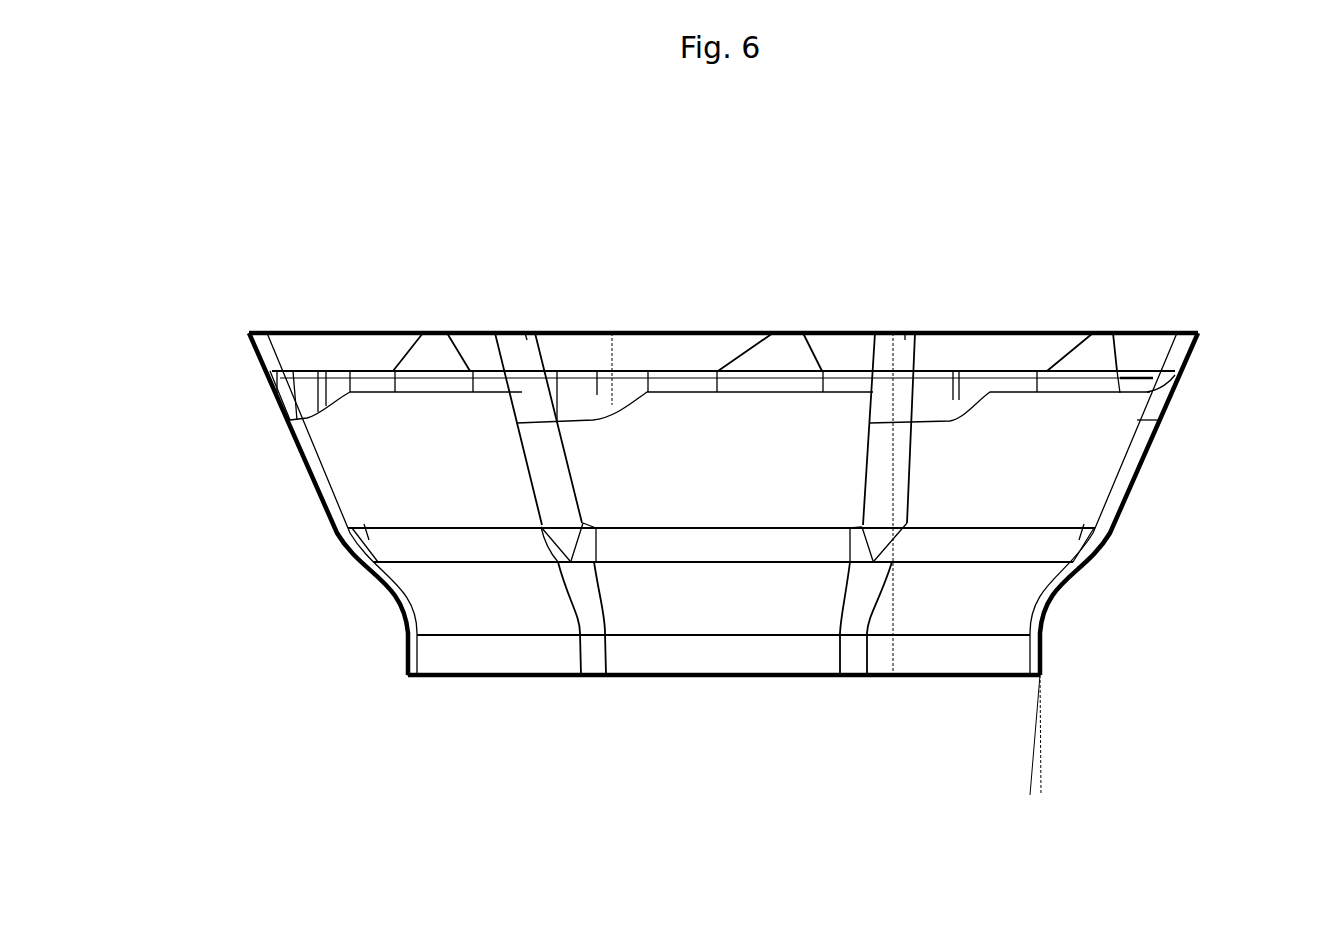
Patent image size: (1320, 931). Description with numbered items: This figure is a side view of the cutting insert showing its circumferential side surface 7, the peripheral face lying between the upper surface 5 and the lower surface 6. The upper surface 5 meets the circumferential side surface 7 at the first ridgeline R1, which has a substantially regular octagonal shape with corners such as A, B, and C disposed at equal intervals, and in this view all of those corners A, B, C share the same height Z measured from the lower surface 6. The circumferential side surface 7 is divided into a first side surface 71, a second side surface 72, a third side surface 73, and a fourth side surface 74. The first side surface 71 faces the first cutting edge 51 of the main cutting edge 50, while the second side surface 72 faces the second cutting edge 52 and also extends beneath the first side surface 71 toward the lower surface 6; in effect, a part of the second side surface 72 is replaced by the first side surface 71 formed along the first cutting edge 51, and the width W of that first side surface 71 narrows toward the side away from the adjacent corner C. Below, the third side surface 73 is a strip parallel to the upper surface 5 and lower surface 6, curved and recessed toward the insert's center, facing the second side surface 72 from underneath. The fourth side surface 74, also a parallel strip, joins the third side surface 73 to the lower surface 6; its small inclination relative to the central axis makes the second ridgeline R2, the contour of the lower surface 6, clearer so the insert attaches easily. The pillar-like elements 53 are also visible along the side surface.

The upper surface 5 is at (307, 331).
The lower surface 6 is at (548, 677).
The circumferential side surface 7 is at (384, 493).
The first ridgeline R1 is at (249, 333).
The second ridgeline R2 is at (408, 677).
The main cutting edge 50 is at (318, 208).
The first cutting edge 51 is at (341, 331).
The second cutting edge 52 is at (473, 331).
The pillar 53 is at (510, 331).
The first side surface 71 is at (666, 350).
The second side surface 72 is at (850, 355).
The third side surface 73 is at (687, 598).
The fourth side surface 74 is at (772, 655).
The corner A is at (1198, 332).
The corner B is at (905, 331).
The corner C is at (525, 331).
The width of the first side surface W is at (612, 450).
The height Z is at (893, 705).